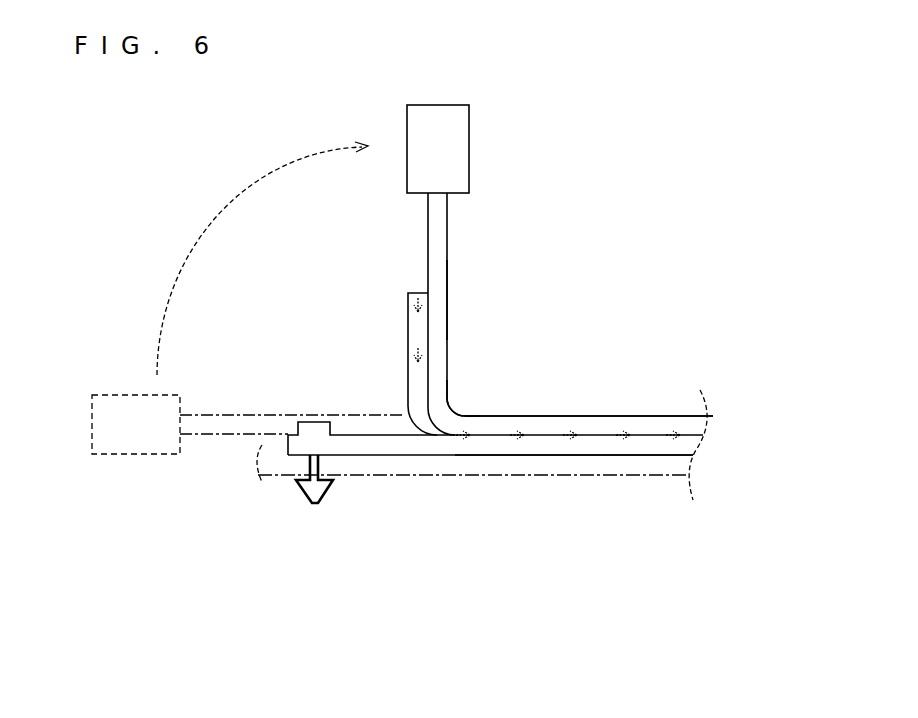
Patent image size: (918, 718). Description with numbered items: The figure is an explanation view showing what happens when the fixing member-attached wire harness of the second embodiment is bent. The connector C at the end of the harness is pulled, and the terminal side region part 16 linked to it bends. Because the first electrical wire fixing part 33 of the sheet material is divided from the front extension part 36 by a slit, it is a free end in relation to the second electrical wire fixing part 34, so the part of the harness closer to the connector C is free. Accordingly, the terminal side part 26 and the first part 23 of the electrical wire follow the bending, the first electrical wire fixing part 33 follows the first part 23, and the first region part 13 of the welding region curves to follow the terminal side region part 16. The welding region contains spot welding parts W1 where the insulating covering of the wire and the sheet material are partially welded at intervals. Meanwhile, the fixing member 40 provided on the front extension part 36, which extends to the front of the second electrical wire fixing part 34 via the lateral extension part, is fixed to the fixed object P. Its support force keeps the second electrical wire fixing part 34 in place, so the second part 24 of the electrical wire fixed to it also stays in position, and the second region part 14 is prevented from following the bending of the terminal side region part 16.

The connector C is at (460, 146).
The terminal side region part 16 is at (452, 249).
The terminal side part 26 is at (437, 262).
The first region part 13 is at (452, 332).
The first electrical wire fixing part 33 is at (409, 338).
The first part 23 is at (442, 379).
The spot welding part W1 is at (518, 432).
The second region part 14 is at (592, 415).
The second part 24 is at (647, 422).
The front extension part 36 is at (362, 452).
The second electrical wire fixing part 34 is at (596, 445).
The fixed object P is at (490, 462).
The fixing member 40 is at (311, 508).